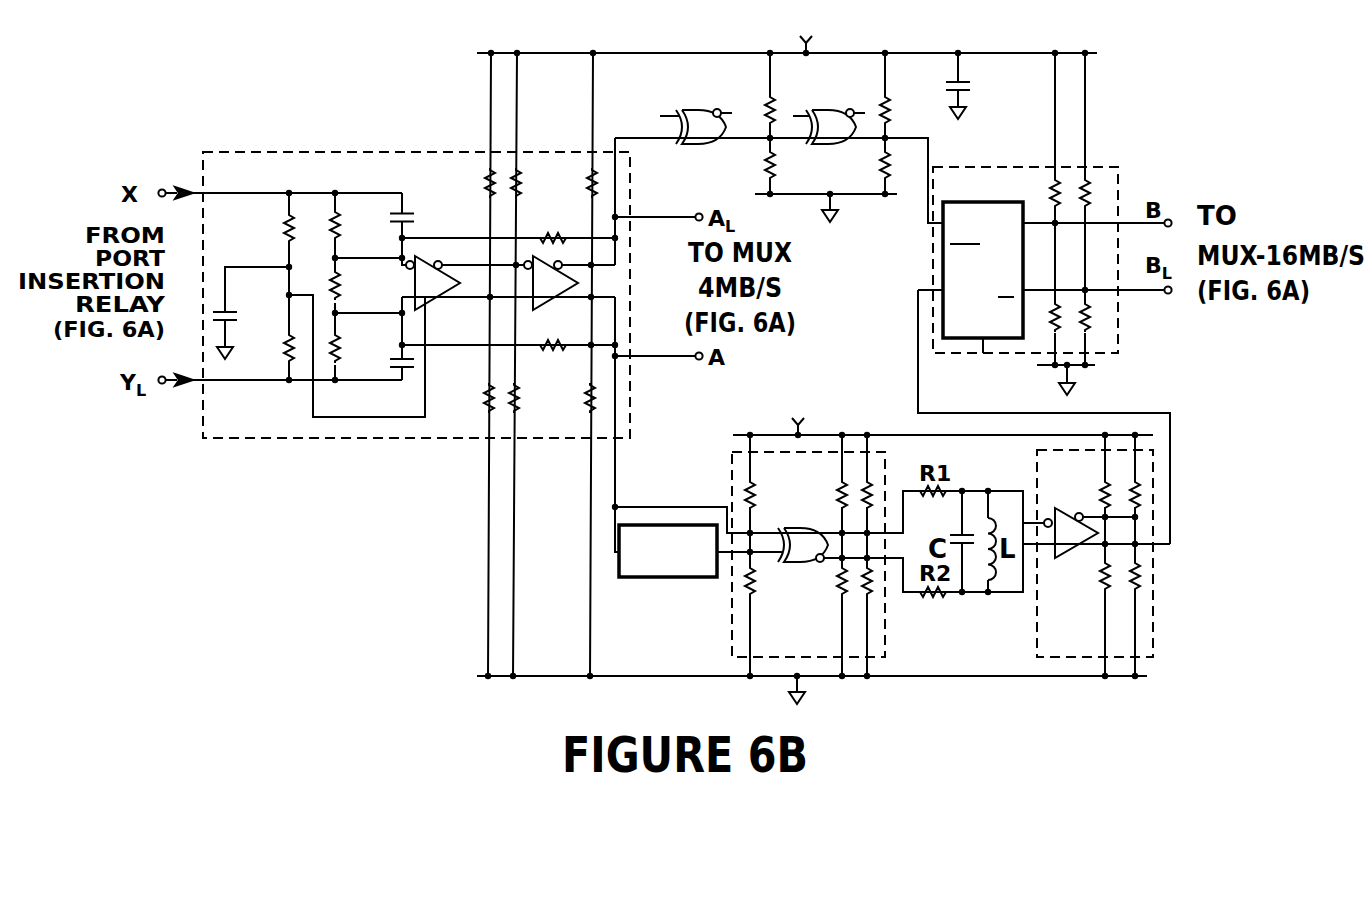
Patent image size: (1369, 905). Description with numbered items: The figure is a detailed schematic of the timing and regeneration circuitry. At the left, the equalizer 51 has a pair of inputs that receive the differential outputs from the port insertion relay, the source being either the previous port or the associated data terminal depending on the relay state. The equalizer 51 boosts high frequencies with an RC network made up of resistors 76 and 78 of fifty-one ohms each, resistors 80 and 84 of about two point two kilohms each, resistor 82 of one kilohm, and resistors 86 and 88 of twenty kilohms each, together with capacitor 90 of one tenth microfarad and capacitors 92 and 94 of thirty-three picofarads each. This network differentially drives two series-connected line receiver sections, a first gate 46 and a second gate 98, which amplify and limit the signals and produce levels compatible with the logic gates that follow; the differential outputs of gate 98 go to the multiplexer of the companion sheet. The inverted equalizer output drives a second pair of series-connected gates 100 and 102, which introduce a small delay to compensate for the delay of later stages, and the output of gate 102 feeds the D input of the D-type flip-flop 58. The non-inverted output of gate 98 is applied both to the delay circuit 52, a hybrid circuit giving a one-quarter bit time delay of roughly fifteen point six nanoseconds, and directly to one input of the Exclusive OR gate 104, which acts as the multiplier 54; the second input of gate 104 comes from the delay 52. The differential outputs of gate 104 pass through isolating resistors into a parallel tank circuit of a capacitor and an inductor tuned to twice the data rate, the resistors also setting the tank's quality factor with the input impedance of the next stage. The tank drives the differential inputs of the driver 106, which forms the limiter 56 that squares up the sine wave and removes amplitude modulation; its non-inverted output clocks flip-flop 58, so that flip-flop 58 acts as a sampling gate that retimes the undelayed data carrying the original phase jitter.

The equalizer circuit 51 is at (237, 150).
The resistor 76 is at (280, 232).
The resistor 78 is at (282, 350).
The resistor 80 is at (340, 237).
The resistor 82 is at (340, 298).
The resistor 84 is at (340, 360).
The resistor 86 is at (553, 232).
The resistor 88 is at (552, 352).
The capacitor 90 is at (252, 300).
The capacitor 92 is at (410, 215).
The capacitor 94 is at (412, 370).
The amplifier 46 is at (440, 298).
The gate 98 is at (560, 298).
The gate 100 is at (695, 108).
The gate 102 is at (830, 108).
The Exclusive OR gate 104 is at (797, 525).
The driver 106 is at (1060, 508).
The D-type flip-flop 58 is at (993, 165).
The delay circuit 52 is at (678, 580).
The multiplier 54 is at (942, 555).
The limiter circuit 56 is at (1121, 555).